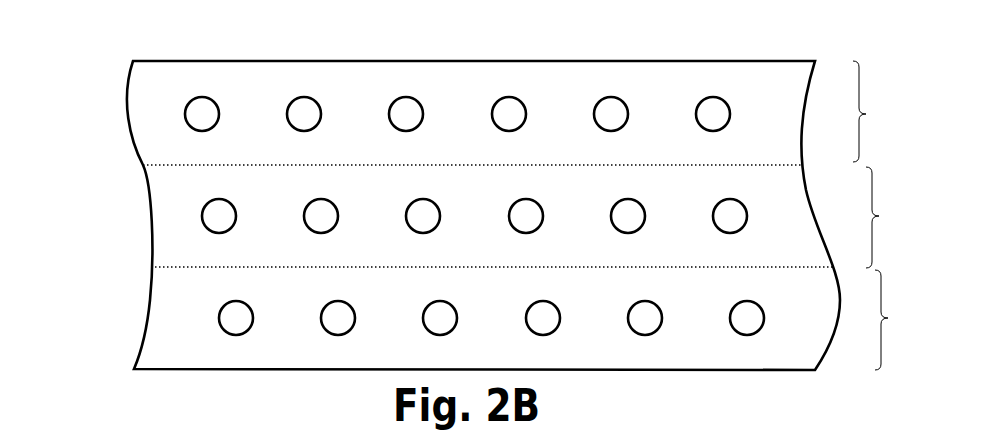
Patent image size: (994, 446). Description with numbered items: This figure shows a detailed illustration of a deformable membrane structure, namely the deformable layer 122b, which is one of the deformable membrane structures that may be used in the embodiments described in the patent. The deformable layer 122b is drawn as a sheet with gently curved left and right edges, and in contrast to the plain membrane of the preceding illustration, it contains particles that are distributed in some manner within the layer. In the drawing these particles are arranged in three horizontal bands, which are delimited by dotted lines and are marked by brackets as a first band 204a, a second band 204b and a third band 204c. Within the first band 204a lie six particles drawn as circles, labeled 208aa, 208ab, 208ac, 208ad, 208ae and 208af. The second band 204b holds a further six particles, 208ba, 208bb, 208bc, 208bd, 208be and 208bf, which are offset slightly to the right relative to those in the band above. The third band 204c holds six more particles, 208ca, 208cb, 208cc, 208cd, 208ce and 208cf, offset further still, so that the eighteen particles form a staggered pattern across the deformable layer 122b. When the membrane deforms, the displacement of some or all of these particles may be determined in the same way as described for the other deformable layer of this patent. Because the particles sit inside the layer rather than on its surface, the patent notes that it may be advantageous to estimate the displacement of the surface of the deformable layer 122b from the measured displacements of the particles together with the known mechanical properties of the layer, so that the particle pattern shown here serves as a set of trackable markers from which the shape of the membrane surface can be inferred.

The deformable layer 122b is at (118, 208).
The first row of openings 204a is at (885, 111).
The second row of openings 204b is at (898, 217).
The third row of openings 204c is at (906, 320).
The particle 208aa is at (213, 100).
The particle 208ab is at (315, 100).
The particle 208ac is at (417, 100).
The particle 208ad is at (520, 100).
The particle 208ae is at (622, 100).
The particle 208af is at (724, 100).
The particle 208ba is at (230, 202).
The particle 208bb is at (332, 202).
The particle 208bc is at (434, 202).
The particle 208bd is at (537, 202).
The particle 208be is at (639, 202).
The particle 208bf is at (739, 231).
The particle 208ca is at (225, 304).
The particle 208cb is at (327, 304).
The particle 208cc is at (429, 304).
The particle 208cd is at (532, 304).
The particle 208ce is at (634, 304).
The particle 208cf is at (736, 304).